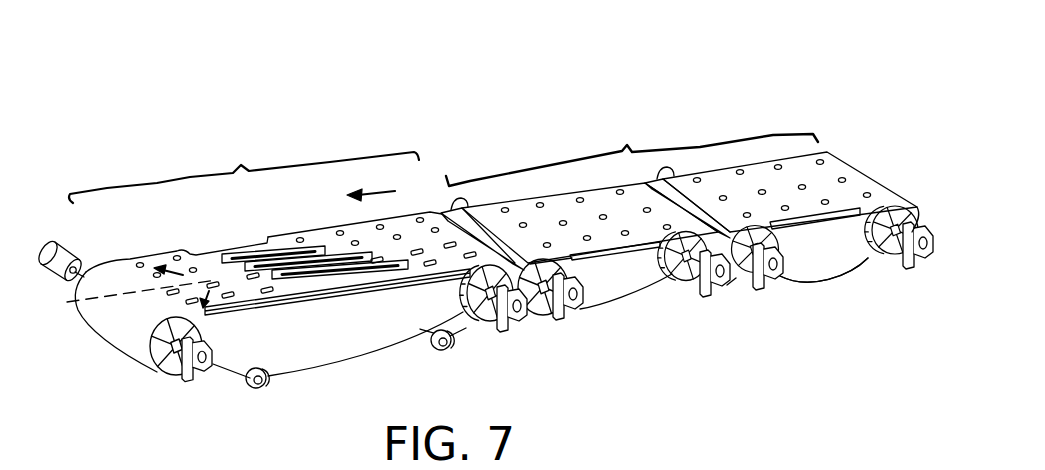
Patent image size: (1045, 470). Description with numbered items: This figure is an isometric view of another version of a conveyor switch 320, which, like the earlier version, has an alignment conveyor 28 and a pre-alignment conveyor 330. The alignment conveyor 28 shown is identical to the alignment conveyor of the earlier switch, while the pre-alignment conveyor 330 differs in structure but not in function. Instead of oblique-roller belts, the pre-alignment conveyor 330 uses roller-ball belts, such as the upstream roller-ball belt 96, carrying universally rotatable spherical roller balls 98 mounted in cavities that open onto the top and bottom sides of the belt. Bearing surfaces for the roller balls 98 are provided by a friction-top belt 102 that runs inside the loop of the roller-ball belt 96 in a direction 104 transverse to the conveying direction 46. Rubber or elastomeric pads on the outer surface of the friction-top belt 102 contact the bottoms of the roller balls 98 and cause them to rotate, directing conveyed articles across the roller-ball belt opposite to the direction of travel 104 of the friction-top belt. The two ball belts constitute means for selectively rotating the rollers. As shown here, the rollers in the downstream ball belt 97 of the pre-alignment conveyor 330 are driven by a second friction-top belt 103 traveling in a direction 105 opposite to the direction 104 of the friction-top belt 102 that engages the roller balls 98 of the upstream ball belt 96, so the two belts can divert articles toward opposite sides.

The switch 320 is at (357, 66).
The alignment conveyor 28 is at (230, 162).
The conveying direction 46 is at (381, 189).
The pre-alignment conveyor 330 is at (625, 150).
The downstream ball belt 97 is at (523, 200).
The roller-ball belt 96 is at (833, 156).
The roller balls 98 is at (740, 169).
The friction-top belt 103 is at (602, 260).
The direction 105 is at (611, 255).
The friction-top belt 102 is at (790, 229).
The direction 104 is at (813, 223).